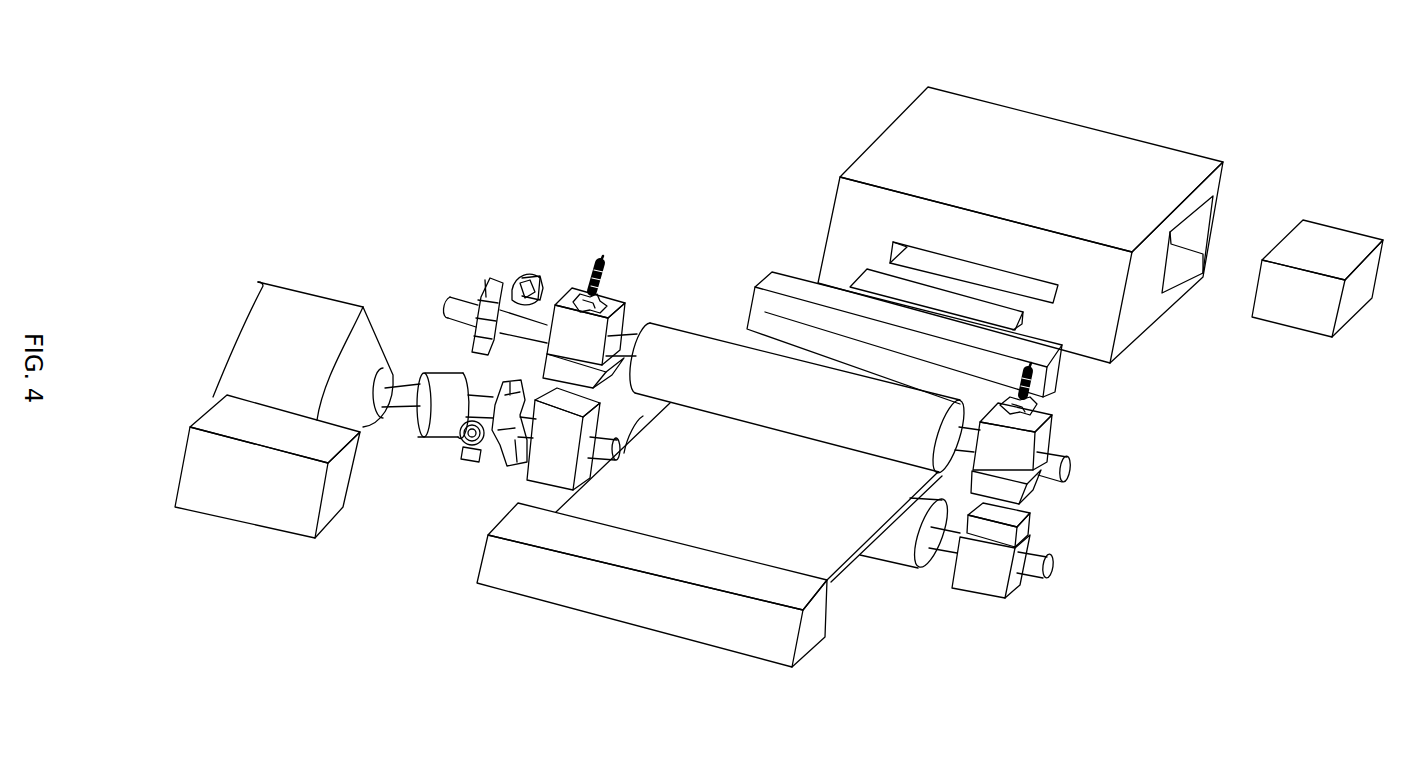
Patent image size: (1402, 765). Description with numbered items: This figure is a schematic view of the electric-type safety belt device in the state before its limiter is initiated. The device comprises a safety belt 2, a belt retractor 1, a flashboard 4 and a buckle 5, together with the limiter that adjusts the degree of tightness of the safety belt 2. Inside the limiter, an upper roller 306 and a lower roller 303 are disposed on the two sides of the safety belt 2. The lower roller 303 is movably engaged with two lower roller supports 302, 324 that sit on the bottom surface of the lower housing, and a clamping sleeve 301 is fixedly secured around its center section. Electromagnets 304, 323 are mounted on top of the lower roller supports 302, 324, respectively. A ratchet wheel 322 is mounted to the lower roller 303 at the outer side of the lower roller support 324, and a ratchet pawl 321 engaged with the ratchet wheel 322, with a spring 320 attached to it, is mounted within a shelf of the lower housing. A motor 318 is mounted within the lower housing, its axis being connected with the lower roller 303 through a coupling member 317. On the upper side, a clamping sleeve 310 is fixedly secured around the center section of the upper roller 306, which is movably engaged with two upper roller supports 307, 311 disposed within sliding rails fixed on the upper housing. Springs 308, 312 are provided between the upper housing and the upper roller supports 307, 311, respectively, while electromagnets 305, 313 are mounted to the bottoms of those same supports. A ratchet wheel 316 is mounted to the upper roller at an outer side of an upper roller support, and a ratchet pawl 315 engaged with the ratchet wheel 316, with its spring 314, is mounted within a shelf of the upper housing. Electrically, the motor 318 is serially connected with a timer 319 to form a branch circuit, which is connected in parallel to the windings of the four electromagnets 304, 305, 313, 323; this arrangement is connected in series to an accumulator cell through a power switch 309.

The belt retractor 1 is at (550, 587).
The safety belt 2 is at (827, 532).
The flashboard 4 is at (1033, 367).
The buckle 5 is at (1128, 152).
The clamping sleeve 301 is at (898, 553).
The lower roller support 302 is at (988, 587).
The lower roller 303 is at (1033, 570).
The electromagnet 304 is at (1032, 525).
The electromagnet 305 is at (1028, 497).
The upper roller 306 is at (1055, 468).
The upper roller support 307 is at (1043, 435).
The spring 308 is at (1038, 400).
The power switch 309 is at (1292, 242).
The clamping sleeve 310 is at (690, 345).
The upper roller support 311 is at (624, 308).
The spring 312 is at (603, 266).
The electromagnet 313 is at (553, 370).
The spring 314 is at (530, 275).
The ratchet pawl 315 is at (515, 270).
The ratchet wheel 316 is at (490, 295).
The coupling member 317 is at (443, 387).
The motor 318 is at (318, 307).
The timer 319 is at (273, 427).
The spring 320 is at (457, 446).
The ratchet pawl 321 is at (480, 458).
The ratchet wheel 322 is at (500, 467).
The electromagnet 323 is at (547, 425).
The lower roller support 324 is at (514, 463).